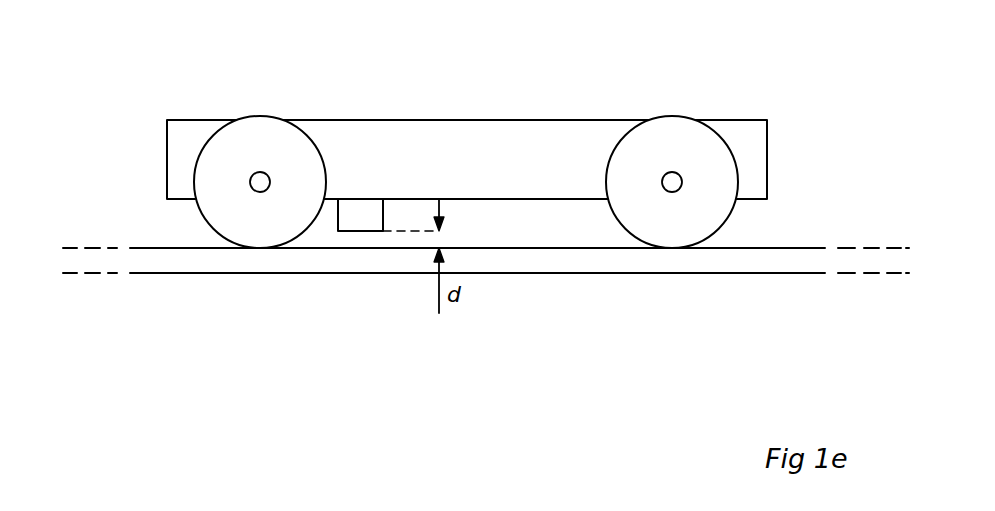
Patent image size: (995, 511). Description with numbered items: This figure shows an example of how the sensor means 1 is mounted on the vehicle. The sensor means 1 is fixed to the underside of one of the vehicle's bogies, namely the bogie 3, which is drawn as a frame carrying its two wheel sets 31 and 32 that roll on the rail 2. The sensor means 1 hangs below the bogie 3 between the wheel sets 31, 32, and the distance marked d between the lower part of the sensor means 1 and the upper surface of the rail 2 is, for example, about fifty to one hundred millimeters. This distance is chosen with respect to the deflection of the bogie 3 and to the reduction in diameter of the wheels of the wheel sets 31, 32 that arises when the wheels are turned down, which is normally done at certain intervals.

The sensor means 1 is at (372, 217).
The rail 2 is at (725, 262).
The bogie 3 is at (462, 133).
The wheel set 31 is at (258, 137).
The wheel set 32 is at (682, 128).